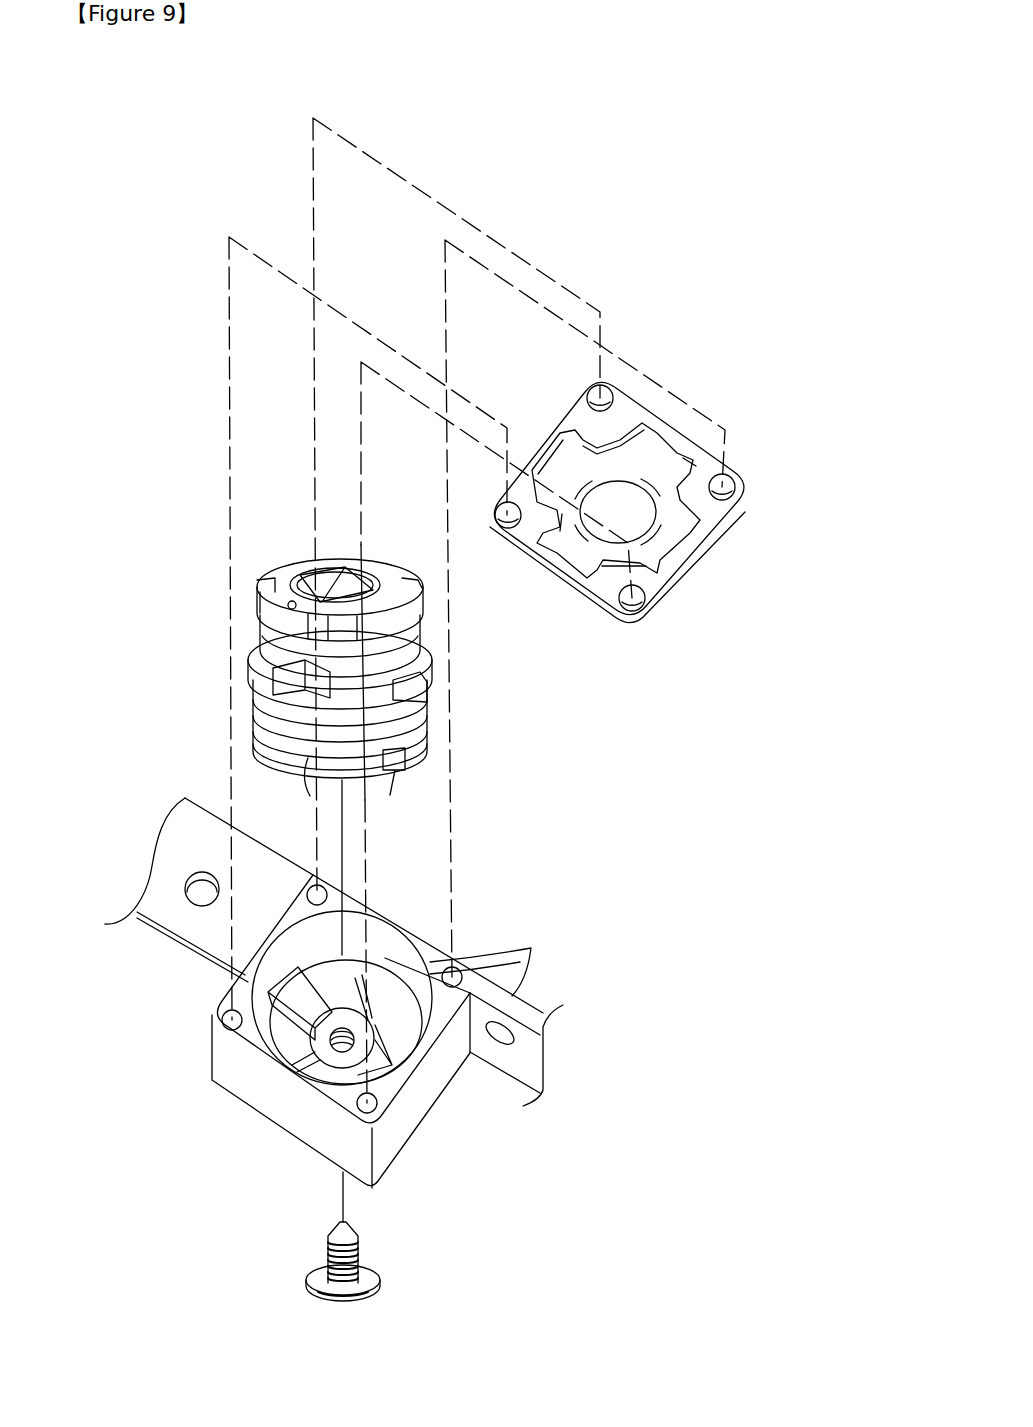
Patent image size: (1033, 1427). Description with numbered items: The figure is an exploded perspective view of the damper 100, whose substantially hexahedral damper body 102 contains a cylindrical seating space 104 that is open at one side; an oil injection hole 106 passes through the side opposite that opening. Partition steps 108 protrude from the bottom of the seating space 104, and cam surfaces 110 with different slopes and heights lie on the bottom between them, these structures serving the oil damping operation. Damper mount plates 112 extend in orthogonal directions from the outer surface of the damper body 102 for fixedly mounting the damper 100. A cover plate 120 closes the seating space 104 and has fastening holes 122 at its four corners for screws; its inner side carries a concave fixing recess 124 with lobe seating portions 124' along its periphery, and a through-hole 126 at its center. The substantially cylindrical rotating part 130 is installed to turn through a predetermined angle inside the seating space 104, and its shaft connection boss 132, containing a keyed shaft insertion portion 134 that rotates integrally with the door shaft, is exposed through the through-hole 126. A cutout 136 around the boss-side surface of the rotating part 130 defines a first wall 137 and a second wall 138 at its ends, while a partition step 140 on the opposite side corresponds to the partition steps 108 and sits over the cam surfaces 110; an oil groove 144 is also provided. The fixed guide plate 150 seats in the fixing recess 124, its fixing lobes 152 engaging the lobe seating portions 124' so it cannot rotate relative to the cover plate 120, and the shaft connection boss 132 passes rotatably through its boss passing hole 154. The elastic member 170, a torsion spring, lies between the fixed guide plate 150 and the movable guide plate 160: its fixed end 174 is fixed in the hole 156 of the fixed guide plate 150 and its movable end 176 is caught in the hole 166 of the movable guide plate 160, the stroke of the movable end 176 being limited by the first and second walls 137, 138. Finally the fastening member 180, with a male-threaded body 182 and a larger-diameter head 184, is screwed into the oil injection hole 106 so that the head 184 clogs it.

The damper 100 is at (317, 994).
The damper body 102 is at (430, 928).
The seating space 104 is at (387, 943).
The oil injection hole 106 is at (318, 1040).
The partition steps 108 is at (297, 997).
The cam surfaces 110 is at (540, 942).
The damper mount plates 112 is at (188, 922).
The cover plate 120 is at (658, 531).
The fastening holes 122 is at (737, 489).
The fixing recess 124 is at (608, 518).
The lobe seating portions 124' is at (640, 474).
The through-hole 126 is at (627, 513).
The rotating part 130 is at (336, 767).
The shaft connection boss 132 is at (325, 565).
The shaft insertion portion 134 is at (360, 582).
The cutout 136 is at (307, 705).
The first wall 137 is at (410, 728).
The second wall 138 is at (288, 700).
The partition step 140 is at (278, 738).
The oil groove 144 is at (443, 782).
The fixed guide plate 150 is at (336, 676).
The fixing lobes 152 is at (288, 562).
The boss passing hole 154 is at (425, 590).
The hole 156 is at (262, 628).
The movable guide plate 160 is at (402, 688).
The hole 166 is at (428, 678).
The elastic member 170 is at (425, 633).
The fixed end 174 is at (285, 604).
The movable end 176 is at (425, 752).
The fastening member 180 is at (380, 1247).
The body 182 is at (328, 1262).
The head 184 is at (336, 1292).